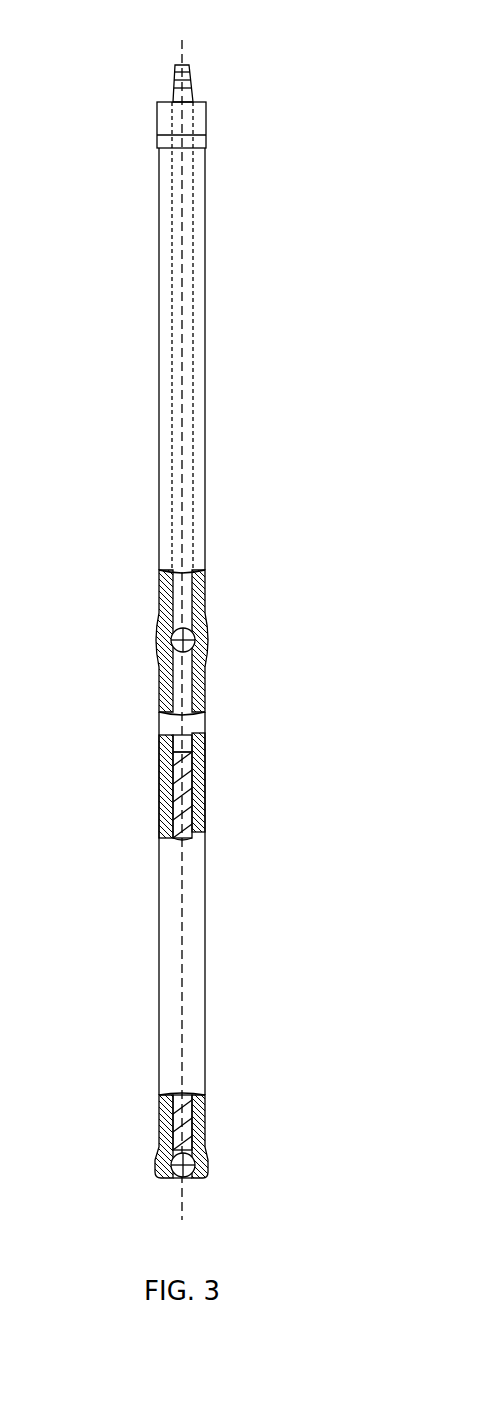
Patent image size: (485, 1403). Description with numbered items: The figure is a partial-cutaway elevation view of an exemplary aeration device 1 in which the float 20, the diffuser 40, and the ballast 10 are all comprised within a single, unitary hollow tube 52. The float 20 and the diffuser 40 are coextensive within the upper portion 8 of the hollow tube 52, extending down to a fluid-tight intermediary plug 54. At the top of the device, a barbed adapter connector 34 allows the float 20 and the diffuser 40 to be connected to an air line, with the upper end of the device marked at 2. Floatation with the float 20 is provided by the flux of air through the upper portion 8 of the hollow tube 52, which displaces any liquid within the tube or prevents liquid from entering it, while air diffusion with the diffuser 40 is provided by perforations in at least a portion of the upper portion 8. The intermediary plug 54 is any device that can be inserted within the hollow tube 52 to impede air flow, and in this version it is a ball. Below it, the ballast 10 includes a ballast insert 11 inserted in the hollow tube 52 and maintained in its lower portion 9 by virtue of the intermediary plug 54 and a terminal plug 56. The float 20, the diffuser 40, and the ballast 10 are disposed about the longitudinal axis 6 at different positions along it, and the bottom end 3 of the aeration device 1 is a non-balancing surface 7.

The aeration device 1 is at (106, 107).
The proximal end tip 2 is at (178, 66).
The bottom end 3 is at (190, 1174).
The longitudinal axis 6 is at (182, 1207).
The non-balancing surface 7 is at (180, 1178).
The upper portion 8 is at (205, 194).
The lower portion 9 is at (205, 1060).
The ballast 10 is at (159, 957).
The ballast insert 11 is at (186, 793).
The float 20 is at (159, 262).
The barbed adapter connector 34 is at (190, 82).
The diffuser 40 is at (159, 374).
The hollow tube 52 is at (206, 536).
The intermediary plug 54 is at (190, 640).
The terminal plug 56 is at (192, 1162).